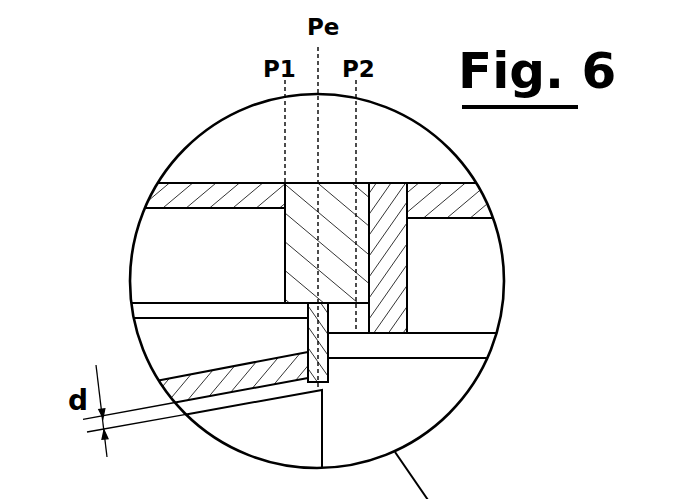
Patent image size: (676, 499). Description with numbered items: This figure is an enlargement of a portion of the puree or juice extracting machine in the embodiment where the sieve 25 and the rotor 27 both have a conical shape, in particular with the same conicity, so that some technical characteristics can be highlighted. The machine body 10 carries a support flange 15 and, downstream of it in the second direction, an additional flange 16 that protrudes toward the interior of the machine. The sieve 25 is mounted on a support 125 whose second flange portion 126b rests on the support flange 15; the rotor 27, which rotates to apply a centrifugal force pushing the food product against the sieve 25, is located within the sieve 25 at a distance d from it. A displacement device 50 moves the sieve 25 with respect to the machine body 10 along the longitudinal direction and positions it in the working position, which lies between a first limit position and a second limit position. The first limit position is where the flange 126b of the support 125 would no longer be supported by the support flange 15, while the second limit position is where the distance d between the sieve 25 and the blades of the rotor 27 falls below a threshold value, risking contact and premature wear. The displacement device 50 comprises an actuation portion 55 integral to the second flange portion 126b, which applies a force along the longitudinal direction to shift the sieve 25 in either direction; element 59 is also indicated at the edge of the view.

The machine body 10 is at (180, 177).
The support flange 15 is at (281, 240).
The additional flange 16 is at (417, 278).
The displacement device 50 is at (475, 323).
The actuation portion 55 is at (465, 348).
The support 125 is at (160, 310).
The second flange portion 126b is at (328, 372).
The sieve 25 is at (195, 378).
The rotor 27 is at (236, 436).
The element 59 is at (534, 475).